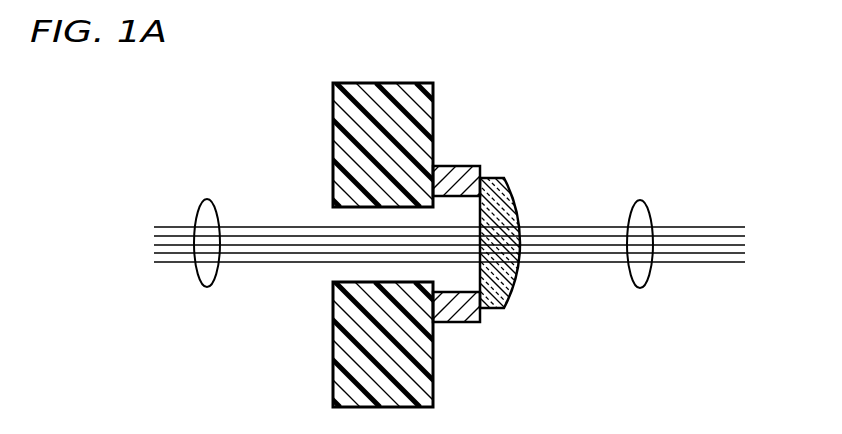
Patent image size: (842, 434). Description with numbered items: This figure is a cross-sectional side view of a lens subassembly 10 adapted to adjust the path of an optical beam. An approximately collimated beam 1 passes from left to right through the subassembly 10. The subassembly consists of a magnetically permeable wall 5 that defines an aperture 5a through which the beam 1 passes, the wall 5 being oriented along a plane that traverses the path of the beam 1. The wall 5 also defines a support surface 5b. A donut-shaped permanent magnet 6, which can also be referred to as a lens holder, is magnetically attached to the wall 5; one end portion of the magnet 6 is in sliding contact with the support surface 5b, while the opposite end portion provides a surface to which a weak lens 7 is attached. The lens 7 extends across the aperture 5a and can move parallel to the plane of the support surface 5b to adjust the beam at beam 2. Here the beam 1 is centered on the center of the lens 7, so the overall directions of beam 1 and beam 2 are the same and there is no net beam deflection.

The optical beam 1 is at (207, 198).
The beam 2 is at (639, 200).
The magnetically permeable wall 5 is at (377, 215).
The aperture 5a is at (336, 267).
The support surface 5b is at (434, 110).
The permanent magnet 6 is at (483, 174).
The weak lens 7 is at (517, 203).
The subassembly 10 is at (496, 413).